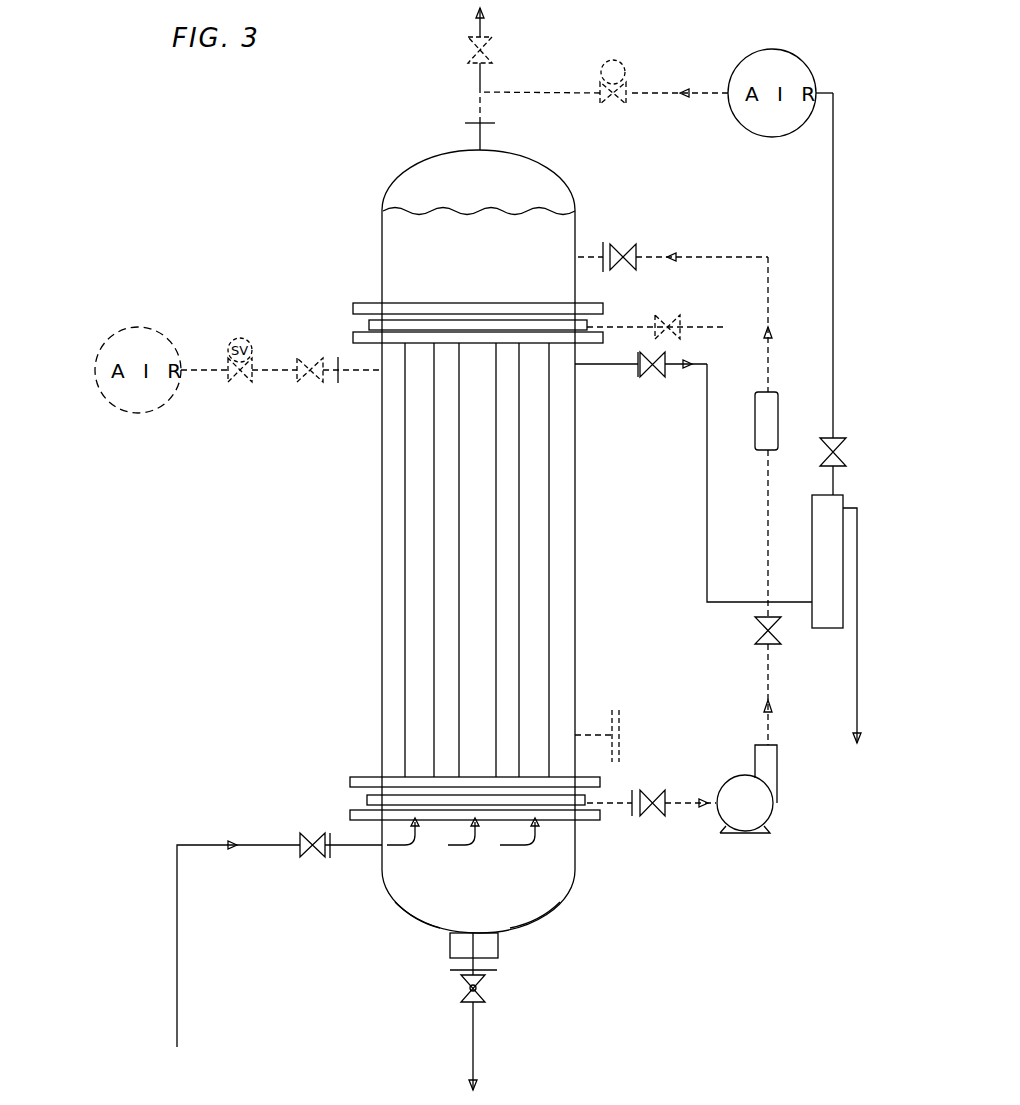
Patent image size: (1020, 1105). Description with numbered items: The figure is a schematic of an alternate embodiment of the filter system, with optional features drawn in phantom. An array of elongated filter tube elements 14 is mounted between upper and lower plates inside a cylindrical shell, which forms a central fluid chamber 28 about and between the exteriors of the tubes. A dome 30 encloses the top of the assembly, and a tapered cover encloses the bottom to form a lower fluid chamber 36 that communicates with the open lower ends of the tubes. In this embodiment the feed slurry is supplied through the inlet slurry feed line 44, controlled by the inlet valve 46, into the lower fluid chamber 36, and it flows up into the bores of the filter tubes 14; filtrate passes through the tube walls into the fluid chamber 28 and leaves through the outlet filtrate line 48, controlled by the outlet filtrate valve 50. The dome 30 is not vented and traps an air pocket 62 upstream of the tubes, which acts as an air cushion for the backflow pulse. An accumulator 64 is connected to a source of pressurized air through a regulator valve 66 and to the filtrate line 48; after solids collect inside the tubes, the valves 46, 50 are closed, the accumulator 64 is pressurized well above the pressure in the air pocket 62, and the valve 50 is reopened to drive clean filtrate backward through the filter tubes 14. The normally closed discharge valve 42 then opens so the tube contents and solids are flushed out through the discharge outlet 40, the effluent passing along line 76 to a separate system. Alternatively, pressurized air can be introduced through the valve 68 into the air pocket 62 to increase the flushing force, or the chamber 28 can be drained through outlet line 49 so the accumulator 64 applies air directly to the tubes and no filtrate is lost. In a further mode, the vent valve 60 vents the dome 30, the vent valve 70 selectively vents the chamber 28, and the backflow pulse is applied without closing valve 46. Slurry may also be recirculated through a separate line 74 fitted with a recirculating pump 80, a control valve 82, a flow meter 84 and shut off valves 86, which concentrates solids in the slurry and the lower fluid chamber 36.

The filter tube elements 14 is at (418, 435).
The central fluid chamber 28 is at (390, 408).
The dome 30 is at (578, 208).
The lower fluid chamber 36 is at (500, 890).
The discharge outlet 40 is at (498, 944).
The discharge valve 42 is at (487, 985).
The inlet slurry feed line 44 is at (345, 852).
The inlet valve 46 is at (310, 857).
The outlet filtrate line 48 is at (707, 379).
The outlet line 49 is at (600, 735).
The outlet filtrate valve 50 is at (662, 354).
The vent valve 60 is at (487, 40).
The air pocket 62 is at (498, 191).
The accumulator 64 is at (831, 623).
The regulator valve 66 is at (838, 436).
The valve 68 is at (627, 88).
The vent valve 70 is at (676, 322).
The recirculating line 74 is at (769, 724).
The line 76 is at (473, 1037).
The recirculating pump 80 is at (775, 791).
The control valve 82 is at (760, 638).
The flow meter 84 is at (778, 418).
The shut off valves 86 is at (633, 246).